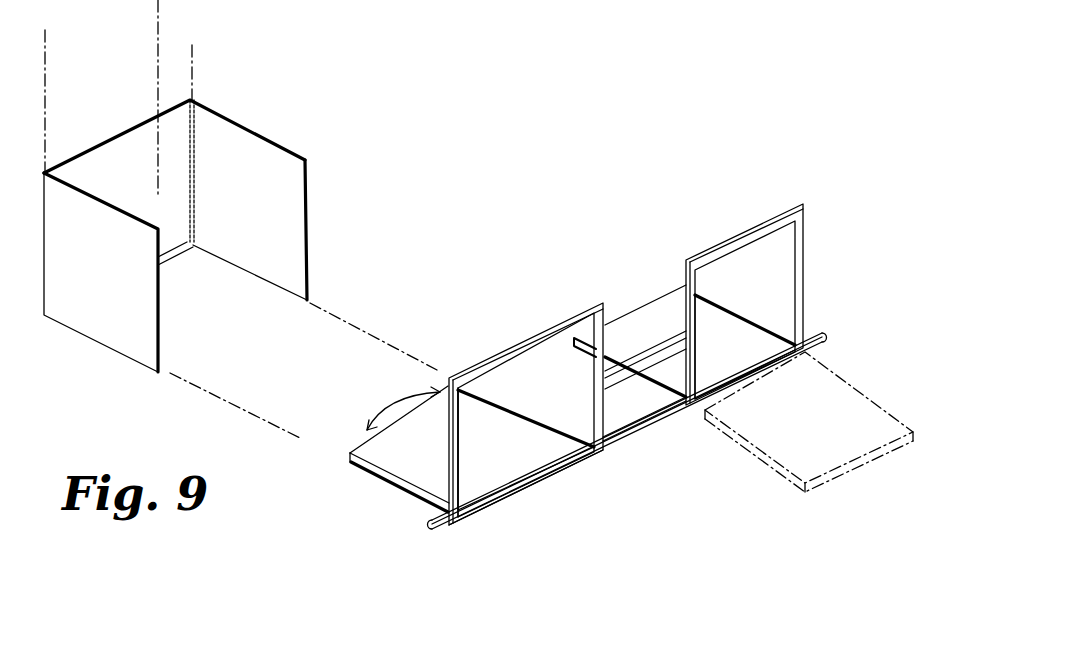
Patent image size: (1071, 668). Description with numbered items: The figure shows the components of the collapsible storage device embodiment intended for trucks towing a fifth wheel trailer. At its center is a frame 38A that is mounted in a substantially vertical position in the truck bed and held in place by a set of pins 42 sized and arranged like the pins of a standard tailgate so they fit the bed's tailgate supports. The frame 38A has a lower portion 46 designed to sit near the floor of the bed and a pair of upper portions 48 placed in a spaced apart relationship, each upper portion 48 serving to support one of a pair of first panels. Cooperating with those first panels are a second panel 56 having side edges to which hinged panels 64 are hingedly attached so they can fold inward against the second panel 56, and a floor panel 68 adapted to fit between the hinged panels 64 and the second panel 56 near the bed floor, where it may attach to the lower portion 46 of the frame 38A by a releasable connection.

The frame 38A is at (591, 305).
The pins 42 is at (430, 523).
The lower portion 46 is at (622, 445).
The upper portion 48 is at (516, 347).
The second panel 56 is at (156, 182).
The hinged panels 64 is at (104, 256).
The floor panel 68 is at (510, 459).